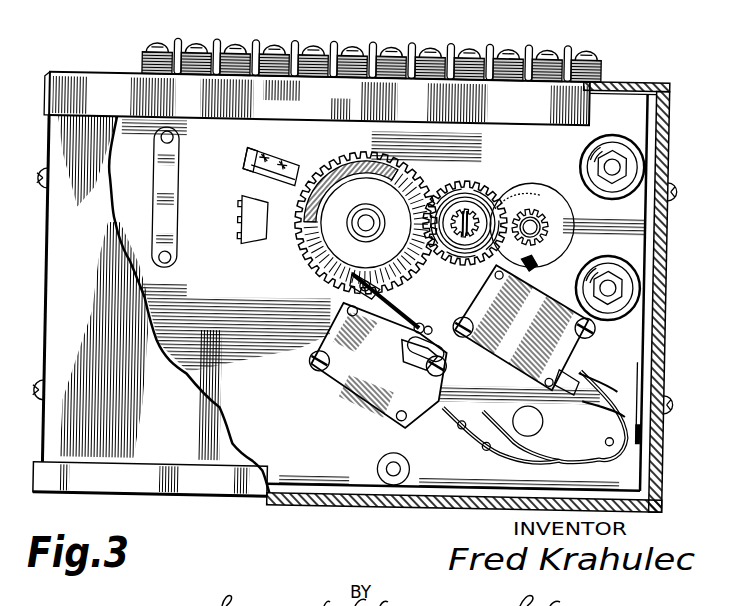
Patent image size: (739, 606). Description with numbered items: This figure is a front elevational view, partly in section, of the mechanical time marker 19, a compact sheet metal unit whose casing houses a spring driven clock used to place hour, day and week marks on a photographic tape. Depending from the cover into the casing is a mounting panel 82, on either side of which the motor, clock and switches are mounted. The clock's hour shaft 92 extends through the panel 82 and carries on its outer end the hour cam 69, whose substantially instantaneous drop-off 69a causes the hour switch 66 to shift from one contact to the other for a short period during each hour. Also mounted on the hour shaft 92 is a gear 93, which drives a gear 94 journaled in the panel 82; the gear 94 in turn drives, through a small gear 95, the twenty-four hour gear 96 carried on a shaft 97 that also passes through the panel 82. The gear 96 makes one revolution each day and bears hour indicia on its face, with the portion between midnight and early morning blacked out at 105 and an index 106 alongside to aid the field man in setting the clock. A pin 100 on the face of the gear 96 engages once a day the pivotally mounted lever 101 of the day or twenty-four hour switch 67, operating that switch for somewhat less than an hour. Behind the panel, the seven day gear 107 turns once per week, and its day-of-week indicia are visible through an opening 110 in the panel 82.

The mechanical time marker 19 is at (636, 70).
The hour switch 66 is at (501, 334).
The day or twenty-four hour switch 67 is at (341, 374).
The hour cam 69 is at (547, 209).
The drop-off 69a is at (534, 252).
The mounting panel 82 is at (349, 307).
The hour shaft 92 is at (542, 217).
The gear 93 is at (525, 191).
The gear 94 is at (465, 199).
The small gear 95 is at (464, 238).
The twenty-four hour gear 96 is at (366, 212).
The shaft 97 is at (359, 214).
The pin 100 is at (375, 284).
The lever 101 is at (345, 287).
The blacked out portion 105 is at (263, 162).
The index 106 is at (227, 159).
The seven day gear 107 is at (241, 236).
The opening 110 is at (258, 234).